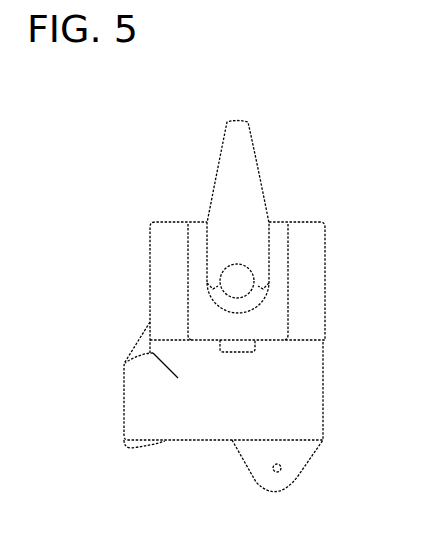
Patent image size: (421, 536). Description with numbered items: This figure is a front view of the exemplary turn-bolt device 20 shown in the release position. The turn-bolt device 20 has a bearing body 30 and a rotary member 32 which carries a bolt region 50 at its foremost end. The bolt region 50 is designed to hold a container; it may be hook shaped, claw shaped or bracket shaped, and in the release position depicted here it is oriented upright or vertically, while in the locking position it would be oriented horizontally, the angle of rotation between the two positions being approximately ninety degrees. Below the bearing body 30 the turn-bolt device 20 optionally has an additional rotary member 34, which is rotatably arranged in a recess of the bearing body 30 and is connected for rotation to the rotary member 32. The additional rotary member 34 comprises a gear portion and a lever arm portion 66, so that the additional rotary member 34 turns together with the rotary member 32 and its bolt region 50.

The turn-bolt device 20 is at (259, 66).
The bearing body 30 is at (160, 243).
The rotary member 32 is at (288, 159).
The bolt region 50 is at (233, 153).
The additional rotary member 34 is at (130, 447).
The lever arm portion 66 is at (175, 413).